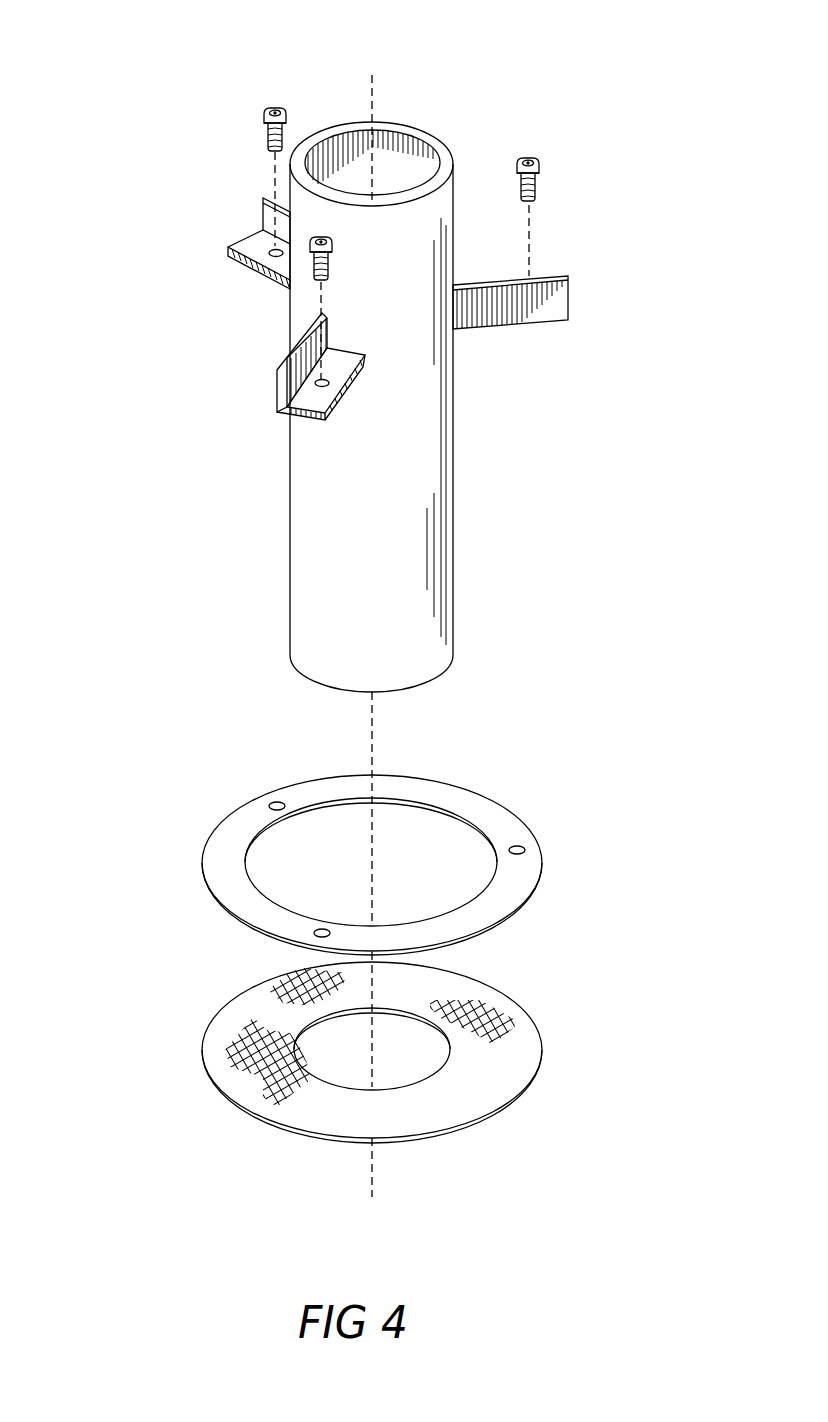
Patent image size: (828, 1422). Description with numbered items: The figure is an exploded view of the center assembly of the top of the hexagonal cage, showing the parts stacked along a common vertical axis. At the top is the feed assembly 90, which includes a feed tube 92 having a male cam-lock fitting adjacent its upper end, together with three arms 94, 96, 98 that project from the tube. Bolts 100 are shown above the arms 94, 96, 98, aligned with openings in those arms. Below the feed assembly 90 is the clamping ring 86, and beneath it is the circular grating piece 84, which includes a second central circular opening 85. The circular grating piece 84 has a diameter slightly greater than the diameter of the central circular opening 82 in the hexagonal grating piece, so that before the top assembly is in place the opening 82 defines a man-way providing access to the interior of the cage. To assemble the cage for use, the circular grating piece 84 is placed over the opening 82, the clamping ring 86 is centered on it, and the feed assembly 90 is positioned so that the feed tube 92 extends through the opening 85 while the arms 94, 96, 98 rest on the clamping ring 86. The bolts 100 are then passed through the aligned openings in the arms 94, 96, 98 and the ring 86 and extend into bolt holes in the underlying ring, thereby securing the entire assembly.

The feed assembly 90 is at (426, 104).
The feed tube 92 is at (453, 547).
The arm 94 is at (277, 390).
The arm 96 is at (540, 321).
The arm 98 is at (228, 247).
The bolt 100 is at (538, 163).
The clamping ring 86 is at (482, 795).
The second central circular opening 85 is at (472, 897).
The circular grating piece 84 is at (217, 1015).
The central circular opening 82 is at (428, 1077).